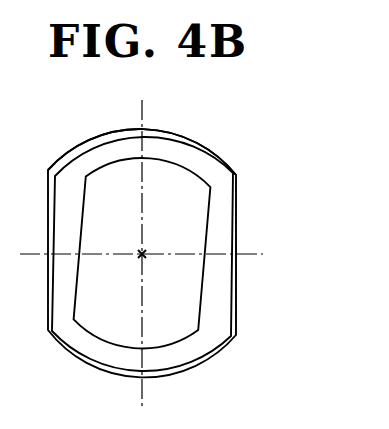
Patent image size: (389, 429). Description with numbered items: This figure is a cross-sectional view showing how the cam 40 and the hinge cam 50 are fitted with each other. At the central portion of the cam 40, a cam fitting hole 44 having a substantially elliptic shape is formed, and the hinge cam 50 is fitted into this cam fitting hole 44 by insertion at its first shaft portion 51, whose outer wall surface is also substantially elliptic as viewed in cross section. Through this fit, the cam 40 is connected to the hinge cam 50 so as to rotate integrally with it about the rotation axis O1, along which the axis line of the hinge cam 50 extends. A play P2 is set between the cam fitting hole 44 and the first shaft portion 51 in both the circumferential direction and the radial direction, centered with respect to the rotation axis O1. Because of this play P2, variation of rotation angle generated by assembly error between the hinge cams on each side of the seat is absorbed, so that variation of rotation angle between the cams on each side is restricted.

The cam fitting hole 44 is at (185, 253).
The cam 40 is at (207, 158).
The first shaft portion 51 is at (206, 253).
The hinge cam 50 is at (224, 220).
The rotation axis O1 is at (146, 251).
The play P2 is at (173, 124).